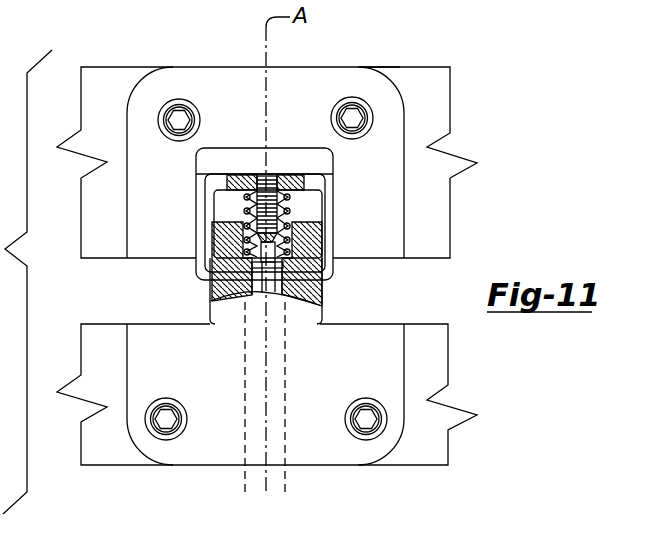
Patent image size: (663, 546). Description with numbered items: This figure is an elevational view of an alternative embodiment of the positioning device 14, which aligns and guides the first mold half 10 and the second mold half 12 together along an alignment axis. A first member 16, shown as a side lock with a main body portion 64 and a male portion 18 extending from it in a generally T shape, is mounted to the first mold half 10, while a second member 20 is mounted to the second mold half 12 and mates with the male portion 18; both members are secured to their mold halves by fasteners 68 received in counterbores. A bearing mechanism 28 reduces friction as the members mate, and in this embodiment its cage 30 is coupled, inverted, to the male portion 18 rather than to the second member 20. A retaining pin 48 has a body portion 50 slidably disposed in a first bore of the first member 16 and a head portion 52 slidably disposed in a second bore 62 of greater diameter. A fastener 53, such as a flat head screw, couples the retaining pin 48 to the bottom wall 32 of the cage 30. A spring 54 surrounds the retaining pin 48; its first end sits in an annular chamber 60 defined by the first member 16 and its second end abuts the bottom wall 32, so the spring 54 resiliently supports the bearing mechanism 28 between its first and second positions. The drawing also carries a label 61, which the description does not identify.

The first mold half 10 is at (448, 362).
The second mold half 12 is at (448, 217).
The positioning device 14 is at (394, 54).
The first member 16 is at (148, 352).
The male portion 18 is at (228, 277).
The second member 20 is at (387, 138).
The bearing mechanism 28 is at (366, 236).
The cage 30 is at (312, 148).
The bottom wall 32 is at (225, 174).
The retaining pin 48 is at (249, 261).
The body portion 50 is at (283, 266).
The head portion 52 is at (322, 304).
The fastener 53 is at (284, 176).
The spring 54 is at (302, 208).
The annular chamber 60 is at (233, 225).
The left block 61 is at (222, 268).
The second bore 62 is at (273, 300).
The main body portion 64 is at (258, 360).
The fasteners 68 is at (175, 121).